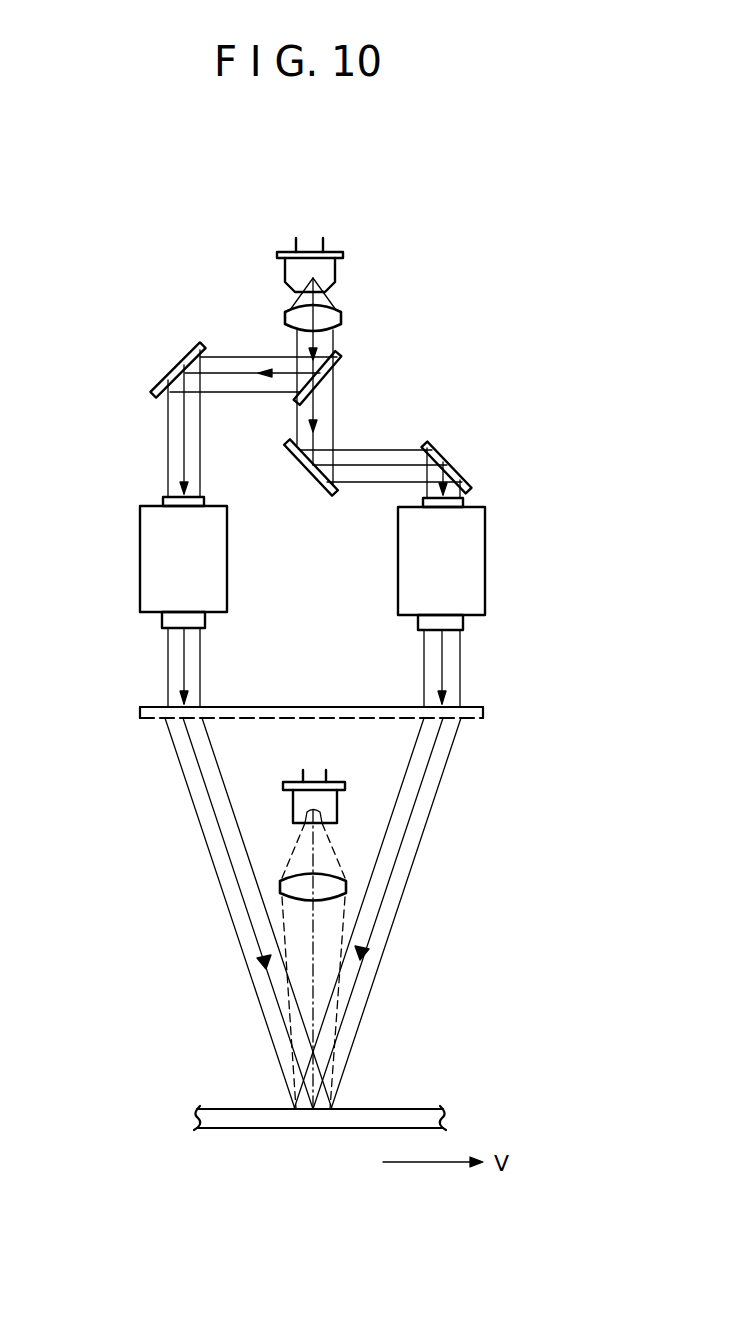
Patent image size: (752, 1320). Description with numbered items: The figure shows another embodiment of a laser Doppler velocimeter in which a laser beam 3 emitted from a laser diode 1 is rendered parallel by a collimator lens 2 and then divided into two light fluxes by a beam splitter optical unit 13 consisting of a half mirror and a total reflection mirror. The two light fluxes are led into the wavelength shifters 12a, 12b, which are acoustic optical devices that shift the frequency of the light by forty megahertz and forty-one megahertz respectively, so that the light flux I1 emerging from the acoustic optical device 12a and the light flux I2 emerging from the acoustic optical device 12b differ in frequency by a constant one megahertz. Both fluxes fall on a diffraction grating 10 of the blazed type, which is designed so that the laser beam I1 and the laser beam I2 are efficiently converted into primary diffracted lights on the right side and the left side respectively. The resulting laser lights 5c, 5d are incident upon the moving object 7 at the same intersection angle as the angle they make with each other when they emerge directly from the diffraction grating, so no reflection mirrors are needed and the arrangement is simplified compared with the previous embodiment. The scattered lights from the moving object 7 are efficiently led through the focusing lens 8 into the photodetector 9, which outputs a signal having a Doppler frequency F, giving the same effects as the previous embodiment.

The laser diode 1 is at (328, 272).
The collimator lens 2 is at (341, 318).
The laser beam 3 is at (310, 351).
The beam splitter optical unit 13 is at (300, 386).
The wavelength shifter 12a is at (138, 520).
The wavelength shifter 12b is at (485, 537).
The light flux I1 is at (185, 660).
The light flux I2 is at (443, 672).
The diffraction grating 10 is at (483, 712).
The laser light 5c is at (200, 780).
The laser light 5d is at (418, 800).
The photodetector 9 is at (340, 805).
The focusing lens 8 is at (345, 887).
The moving object 7 is at (222, 1118).